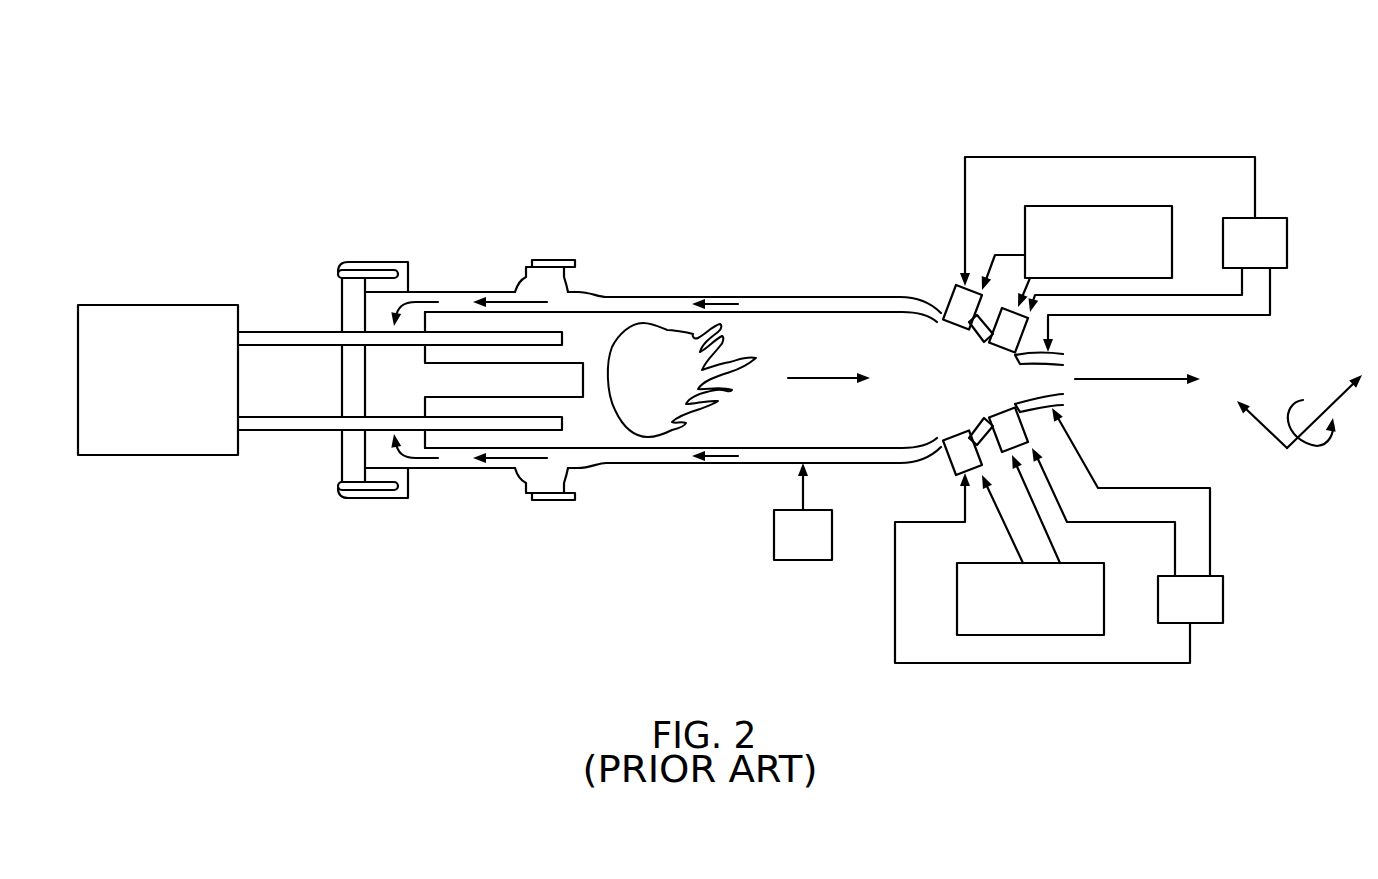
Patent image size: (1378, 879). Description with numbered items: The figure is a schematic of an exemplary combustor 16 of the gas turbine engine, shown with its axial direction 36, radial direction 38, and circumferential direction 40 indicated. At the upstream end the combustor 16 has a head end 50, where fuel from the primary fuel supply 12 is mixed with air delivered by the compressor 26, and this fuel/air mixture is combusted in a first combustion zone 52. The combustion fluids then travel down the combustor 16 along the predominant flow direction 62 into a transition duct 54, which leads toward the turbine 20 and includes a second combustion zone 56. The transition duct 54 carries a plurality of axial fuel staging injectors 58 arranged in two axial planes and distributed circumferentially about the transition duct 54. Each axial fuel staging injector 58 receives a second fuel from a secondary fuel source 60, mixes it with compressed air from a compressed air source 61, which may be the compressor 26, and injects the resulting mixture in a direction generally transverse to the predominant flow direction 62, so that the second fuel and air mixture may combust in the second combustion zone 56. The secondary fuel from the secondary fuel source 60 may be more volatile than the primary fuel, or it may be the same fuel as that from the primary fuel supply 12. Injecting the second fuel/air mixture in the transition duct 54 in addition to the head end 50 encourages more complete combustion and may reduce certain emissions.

The primary fuel supply 12 is at (160, 304).
The combustor 16 is at (726, 96).
The turbine 20 is at (1167, 386).
The compressor 26 is at (818, 548).
The axial direction 36 is at (1361, 372).
The radial direction 38 is at (1238, 399).
The circumferential direction 40 is at (1325, 449).
The head end 50 is at (485, 255).
The first combustion zone 52 is at (662, 390).
The transition duct 54 is at (1060, 412).
The second combustion zone 56 is at (980, 389).
The axial fuel staging injector 58 is at (1013, 322).
The secondary fuel source 60 is at (1100, 205).
The compressed air source 61 is at (1289, 248).
The predominant flow direction 62 is at (812, 376).